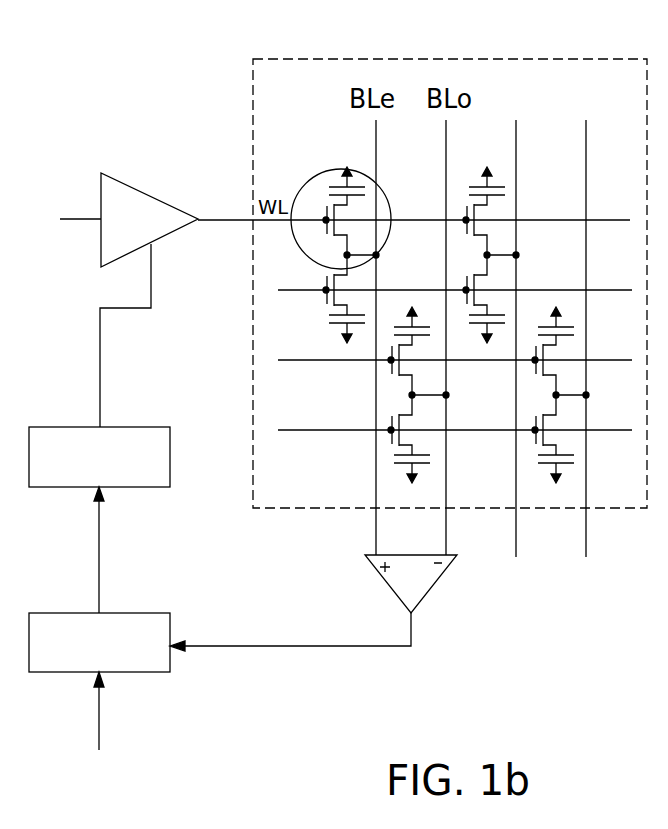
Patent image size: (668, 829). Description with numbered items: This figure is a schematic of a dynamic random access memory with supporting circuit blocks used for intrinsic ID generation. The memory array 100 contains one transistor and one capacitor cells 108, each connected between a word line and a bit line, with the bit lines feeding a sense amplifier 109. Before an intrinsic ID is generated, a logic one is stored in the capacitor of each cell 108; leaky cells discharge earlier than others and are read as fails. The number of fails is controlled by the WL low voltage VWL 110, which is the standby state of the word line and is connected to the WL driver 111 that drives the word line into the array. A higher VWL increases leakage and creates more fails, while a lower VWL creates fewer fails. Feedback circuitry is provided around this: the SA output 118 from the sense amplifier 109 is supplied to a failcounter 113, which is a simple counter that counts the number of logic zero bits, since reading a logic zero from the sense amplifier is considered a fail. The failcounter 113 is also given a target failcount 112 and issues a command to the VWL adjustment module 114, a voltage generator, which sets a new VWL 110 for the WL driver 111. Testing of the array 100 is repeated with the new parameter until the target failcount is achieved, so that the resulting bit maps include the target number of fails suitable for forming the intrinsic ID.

The memory array 100 is at (600, 59).
The one transistor and one capacitor cell 108 is at (296, 192).
The sense amplifier 109 is at (428, 591).
The WL low voltage (VWL) 110 is at (151, 296).
The WL driver 111 is at (145, 207).
The target failcount 112 is at (140, 784).
The failcounter 113 is at (60, 673).
The VWL adjustment module (voltage generator) 114 is at (60, 488).
The SA output 118 is at (290, 645).